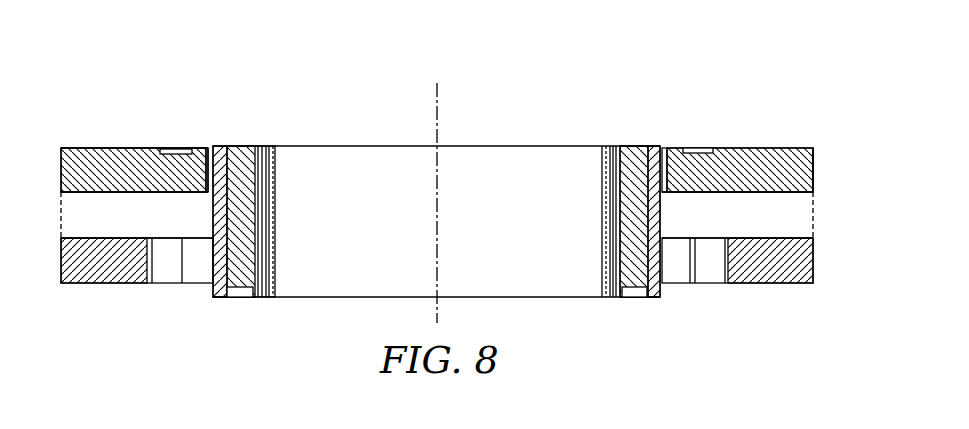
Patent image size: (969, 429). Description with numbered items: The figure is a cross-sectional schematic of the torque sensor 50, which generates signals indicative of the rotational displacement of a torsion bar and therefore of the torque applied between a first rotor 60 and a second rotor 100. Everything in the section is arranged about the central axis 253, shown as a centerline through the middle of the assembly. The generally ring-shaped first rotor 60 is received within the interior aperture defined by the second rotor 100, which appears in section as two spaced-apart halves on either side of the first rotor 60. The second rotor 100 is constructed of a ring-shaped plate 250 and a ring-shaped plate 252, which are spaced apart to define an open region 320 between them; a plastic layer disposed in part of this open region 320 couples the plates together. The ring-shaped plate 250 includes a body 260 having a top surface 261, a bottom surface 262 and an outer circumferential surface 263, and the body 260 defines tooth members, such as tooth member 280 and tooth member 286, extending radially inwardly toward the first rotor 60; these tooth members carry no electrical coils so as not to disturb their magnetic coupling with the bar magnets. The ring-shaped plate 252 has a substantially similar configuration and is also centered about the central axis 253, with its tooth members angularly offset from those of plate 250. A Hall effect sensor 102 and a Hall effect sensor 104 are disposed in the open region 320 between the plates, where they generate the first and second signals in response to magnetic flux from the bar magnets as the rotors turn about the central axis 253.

The torque sensor 50 is at (452, 154).
The first rotor 60 is at (636, 144).
The central axis 253 is at (438, 122).
The body 260 is at (171, 131).
The top surface 261 is at (107, 148).
The tooth member 286 is at (198, 158).
The bottom surface 262 is at (96, 193).
The Hall effect sensor 104 is at (78, 217).
The second rotor 100 is at (757, 204).
The ring-shaped plate 250 is at (757, 128).
The tooth member 280 is at (676, 153).
The outer circumferential surface 263 is at (814, 172).
The open region 320 is at (737, 215).
The ring-shaped plate 252 is at (758, 284).
The Hall effect sensor 102 is at (797, 216).